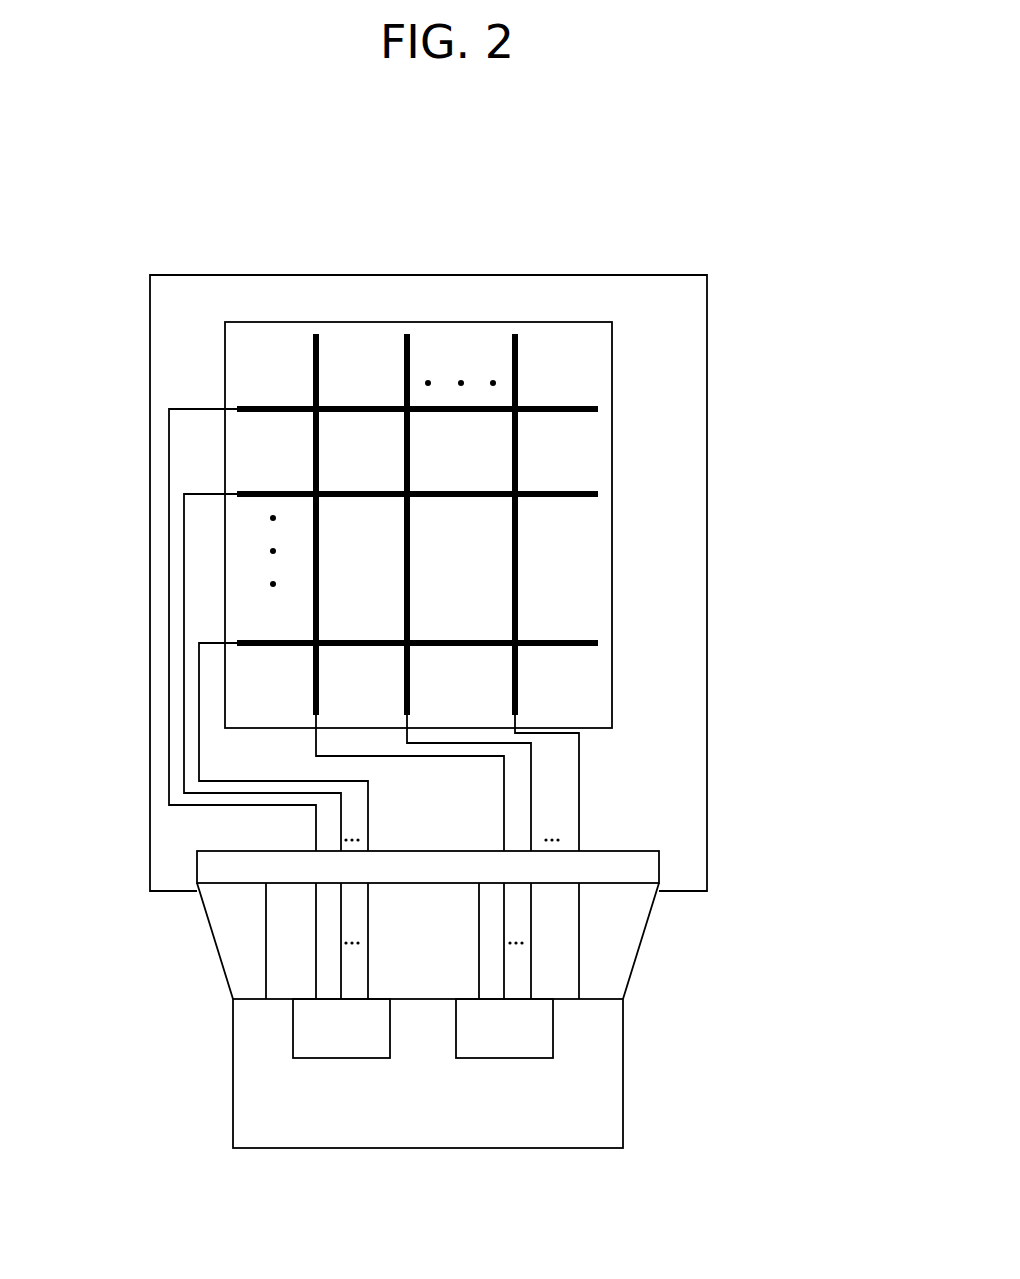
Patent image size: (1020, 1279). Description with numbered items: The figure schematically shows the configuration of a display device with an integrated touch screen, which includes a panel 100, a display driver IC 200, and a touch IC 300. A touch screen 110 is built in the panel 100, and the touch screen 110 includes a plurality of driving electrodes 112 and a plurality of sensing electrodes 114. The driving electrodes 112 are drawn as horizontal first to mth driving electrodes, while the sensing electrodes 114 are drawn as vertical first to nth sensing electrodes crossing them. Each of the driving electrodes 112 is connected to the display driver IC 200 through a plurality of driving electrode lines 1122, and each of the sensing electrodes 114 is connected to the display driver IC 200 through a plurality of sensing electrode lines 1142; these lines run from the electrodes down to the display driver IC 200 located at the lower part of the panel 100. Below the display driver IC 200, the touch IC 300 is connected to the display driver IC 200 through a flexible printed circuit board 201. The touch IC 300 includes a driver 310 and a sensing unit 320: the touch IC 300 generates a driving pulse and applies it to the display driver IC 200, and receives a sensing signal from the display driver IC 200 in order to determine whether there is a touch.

The panel 100 is at (707, 342).
The touch screen 110 is at (553, 322).
The driving electrodes 112 is at (577, 402).
The sensing electrodes 114 is at (319, 357).
The driving electrode lines 1122 is at (169, 458).
The sensing electrode lines 1142 is at (579, 760).
The display driver IC 200 is at (659, 866).
The flexible printed circuit board 201 is at (641, 942).
The touch IC 300 is at (623, 1085).
The driver 310 is at (340, 1058).
The sensing unit 320 is at (518, 1058).